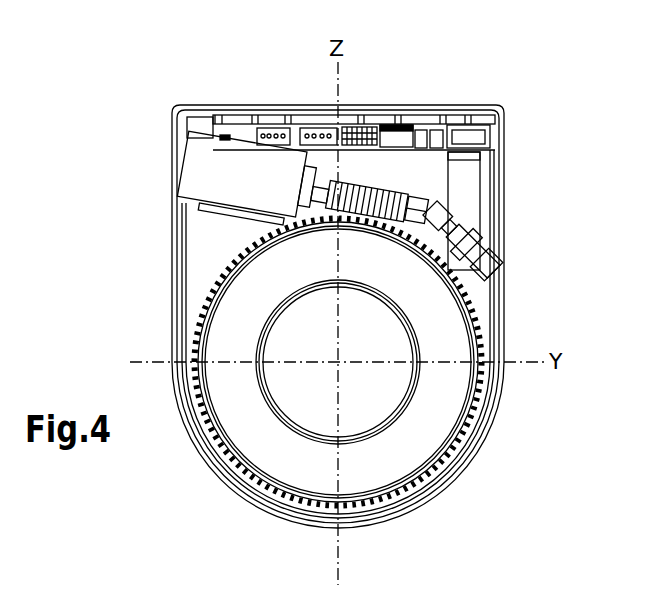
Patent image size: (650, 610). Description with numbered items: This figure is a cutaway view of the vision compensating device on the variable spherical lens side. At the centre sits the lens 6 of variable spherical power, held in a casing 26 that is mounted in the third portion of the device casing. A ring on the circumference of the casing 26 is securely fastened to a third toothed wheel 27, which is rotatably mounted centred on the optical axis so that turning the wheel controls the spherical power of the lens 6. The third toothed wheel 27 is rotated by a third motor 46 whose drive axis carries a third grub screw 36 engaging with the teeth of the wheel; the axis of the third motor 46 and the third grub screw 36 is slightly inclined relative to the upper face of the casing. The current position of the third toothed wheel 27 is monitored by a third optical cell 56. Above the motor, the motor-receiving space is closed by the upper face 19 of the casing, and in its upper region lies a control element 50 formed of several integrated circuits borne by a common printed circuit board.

The upper face 19 is at (242, 115).
The control element 50 is at (395, 124).
The third motor 46 is at (202, 161).
The third grub screw 36 is at (397, 186).
The third optical cell 56 is at (487, 250).
The third toothed wheel 27 is at (212, 291).
The casing 26 is at (457, 393).
The lens of variable spherical power 6 is at (295, 397).